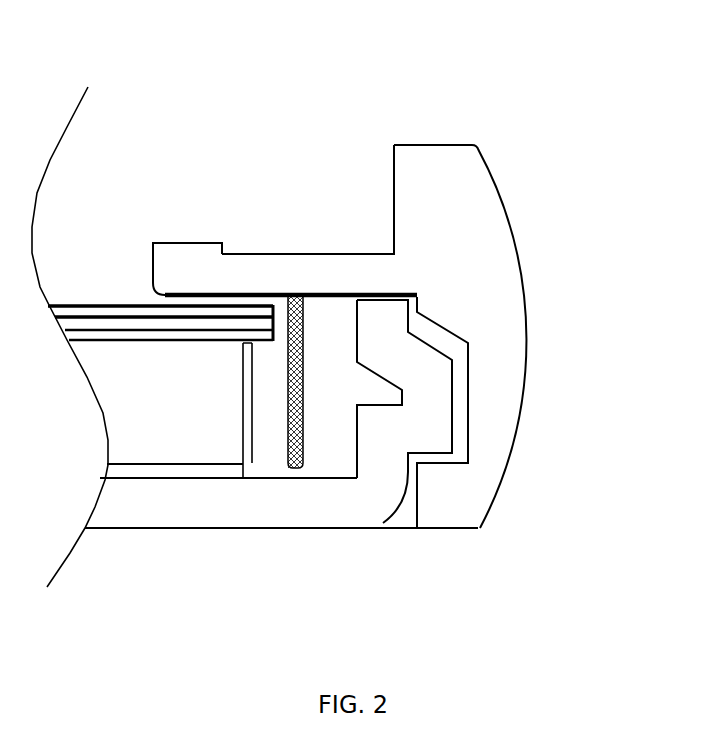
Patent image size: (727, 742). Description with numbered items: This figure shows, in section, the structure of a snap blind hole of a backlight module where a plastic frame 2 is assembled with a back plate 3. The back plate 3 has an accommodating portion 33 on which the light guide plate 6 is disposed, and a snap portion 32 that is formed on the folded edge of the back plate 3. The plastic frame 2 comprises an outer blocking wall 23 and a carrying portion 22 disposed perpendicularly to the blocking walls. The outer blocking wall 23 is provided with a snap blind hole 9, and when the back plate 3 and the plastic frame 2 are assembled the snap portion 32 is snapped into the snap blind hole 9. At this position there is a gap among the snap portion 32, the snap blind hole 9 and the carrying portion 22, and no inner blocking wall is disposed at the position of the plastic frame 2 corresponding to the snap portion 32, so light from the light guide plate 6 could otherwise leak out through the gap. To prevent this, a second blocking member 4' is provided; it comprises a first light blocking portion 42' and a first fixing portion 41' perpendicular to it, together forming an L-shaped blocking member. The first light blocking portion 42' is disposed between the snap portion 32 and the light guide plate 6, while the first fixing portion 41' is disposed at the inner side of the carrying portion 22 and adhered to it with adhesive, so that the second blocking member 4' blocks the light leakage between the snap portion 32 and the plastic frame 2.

The plastic frame 2 is at (521, 162).
The outer blocking wall 23 is at (487, 278).
The carrying portion 22 is at (295, 265).
The first fixing portion 41' is at (291, 217).
The first light blocking portion 42' is at (339, 313).
The second blocking member 4' is at (355, 450).
The light guide plate 6 is at (152, 397).
The snap blind hole 9 is at (452, 348).
The snap portion 32 is at (423, 400).
The accommodating portion 33 is at (143, 507).
The back plate 3 is at (391, 554).